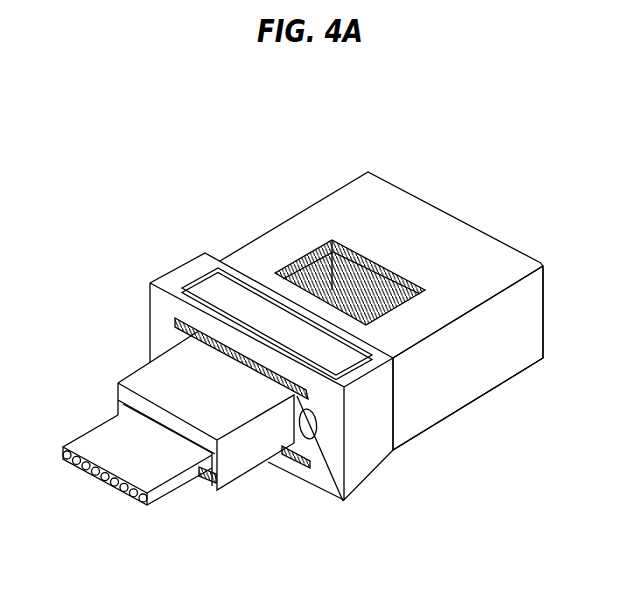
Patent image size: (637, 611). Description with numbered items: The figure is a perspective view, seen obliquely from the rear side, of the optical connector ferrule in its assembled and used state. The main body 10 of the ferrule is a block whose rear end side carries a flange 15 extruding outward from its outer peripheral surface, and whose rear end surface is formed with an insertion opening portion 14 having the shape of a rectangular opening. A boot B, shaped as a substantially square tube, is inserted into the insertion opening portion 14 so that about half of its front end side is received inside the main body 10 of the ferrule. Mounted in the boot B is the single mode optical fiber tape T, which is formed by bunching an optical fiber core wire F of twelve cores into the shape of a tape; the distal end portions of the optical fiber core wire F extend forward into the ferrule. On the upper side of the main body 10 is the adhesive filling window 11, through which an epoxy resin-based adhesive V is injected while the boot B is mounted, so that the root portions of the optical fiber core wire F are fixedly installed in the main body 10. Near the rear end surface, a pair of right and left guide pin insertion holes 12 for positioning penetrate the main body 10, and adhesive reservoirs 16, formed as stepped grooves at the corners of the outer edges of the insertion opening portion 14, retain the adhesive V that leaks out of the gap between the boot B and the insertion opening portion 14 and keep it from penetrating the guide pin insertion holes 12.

The main body of the ferrule 10 is at (382, 172).
The adhesive filling window 11 is at (352, 258).
The guide pin insertion holes 12 is at (311, 440).
The insertion opening portion 14 is at (205, 338).
The flange 15 is at (373, 437).
The adhesive reservoirs 16 is at (178, 325).
The boot B is at (184, 391).
The single mode optical fiber tape T is at (140, 437).
The optical fiber core wire F is at (143, 502).
The adhesive V is at (400, 275).